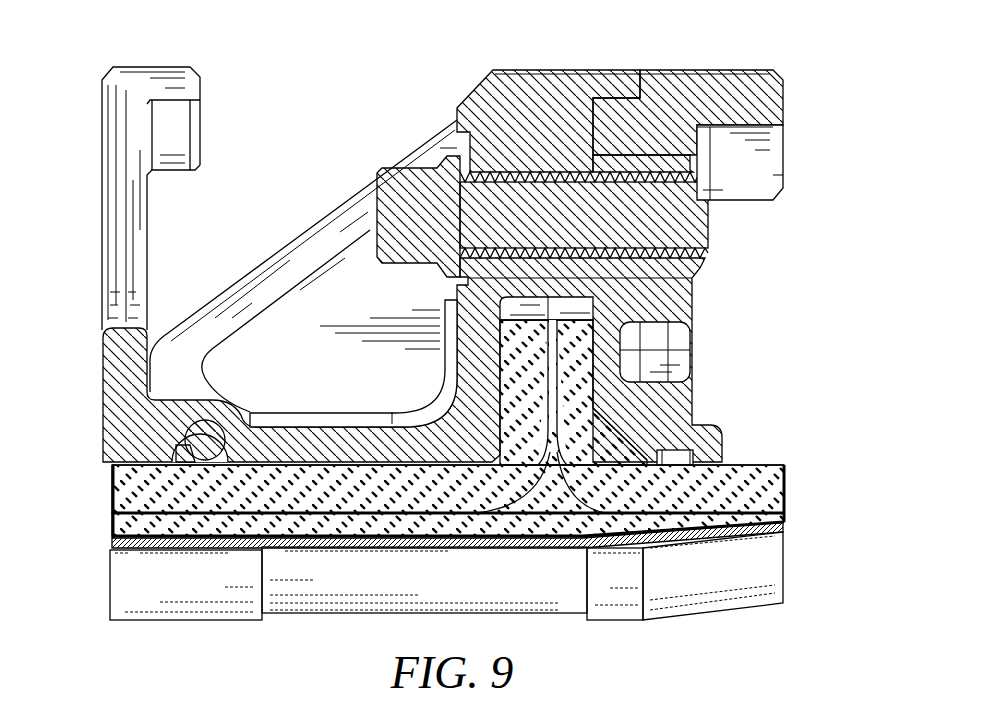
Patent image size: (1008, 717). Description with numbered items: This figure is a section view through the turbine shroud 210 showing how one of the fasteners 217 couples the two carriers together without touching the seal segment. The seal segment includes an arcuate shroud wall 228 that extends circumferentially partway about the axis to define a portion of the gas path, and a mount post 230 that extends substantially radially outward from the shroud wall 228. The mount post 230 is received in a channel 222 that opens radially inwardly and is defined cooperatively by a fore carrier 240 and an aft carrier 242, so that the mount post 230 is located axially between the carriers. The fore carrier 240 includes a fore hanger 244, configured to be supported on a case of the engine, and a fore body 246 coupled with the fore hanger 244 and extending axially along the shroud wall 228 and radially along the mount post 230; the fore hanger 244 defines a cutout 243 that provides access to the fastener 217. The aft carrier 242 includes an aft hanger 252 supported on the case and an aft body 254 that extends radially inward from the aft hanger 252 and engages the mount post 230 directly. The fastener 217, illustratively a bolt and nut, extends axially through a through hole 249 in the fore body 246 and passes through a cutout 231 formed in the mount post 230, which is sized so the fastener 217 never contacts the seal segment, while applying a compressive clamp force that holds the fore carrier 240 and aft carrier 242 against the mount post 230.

The turbine shroud 210 is at (300, 93).
The fastener 217 is at (413, 218).
The channel 222 is at (492, 343).
The shroud wall 228 is at (110, 532).
The mount post 230 is at (605, 462).
The cutout 231 is at (572, 305).
The fore carrier 240 is at (93, 330).
The aft carrier 242 is at (792, 138).
The cutout 243 is at (128, 225).
The fore hanger 244 is at (100, 403).
The fore body 246 is at (425, 420).
The through hole 249 is at (520, 170).
The aft hanger 252 is at (740, 95).
The aft body 254 is at (692, 325).